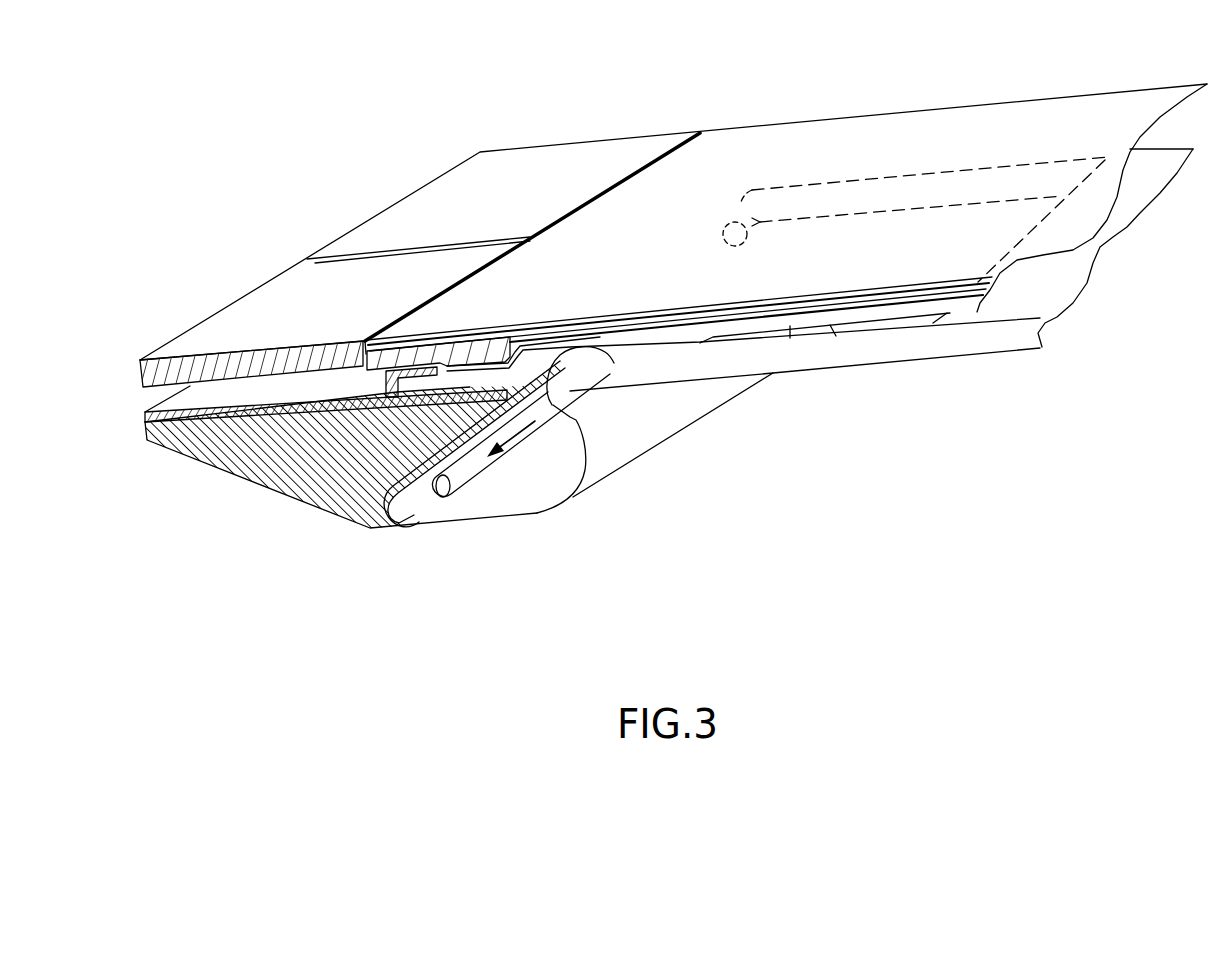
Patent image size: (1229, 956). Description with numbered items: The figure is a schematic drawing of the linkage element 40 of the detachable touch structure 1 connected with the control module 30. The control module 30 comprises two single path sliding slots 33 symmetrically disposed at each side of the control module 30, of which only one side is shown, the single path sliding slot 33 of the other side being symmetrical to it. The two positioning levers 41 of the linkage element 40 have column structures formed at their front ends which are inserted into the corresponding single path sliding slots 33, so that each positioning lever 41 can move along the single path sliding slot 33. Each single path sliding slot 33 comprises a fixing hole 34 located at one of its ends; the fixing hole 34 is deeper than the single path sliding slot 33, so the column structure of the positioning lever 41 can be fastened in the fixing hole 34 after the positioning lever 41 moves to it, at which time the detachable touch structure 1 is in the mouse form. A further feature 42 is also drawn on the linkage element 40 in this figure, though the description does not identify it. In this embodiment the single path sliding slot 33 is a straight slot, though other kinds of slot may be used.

The detachable touch structure 1 is at (163, 628).
The control module 30 is at (280, 468).
The single path sliding slot 33 is at (503, 443).
The fixing hole 34 is at (447, 484).
The linkage element 40 is at (1007, 339).
The positioning lever 41 is at (906, 188).
The connector hole 42 is at (728, 234).